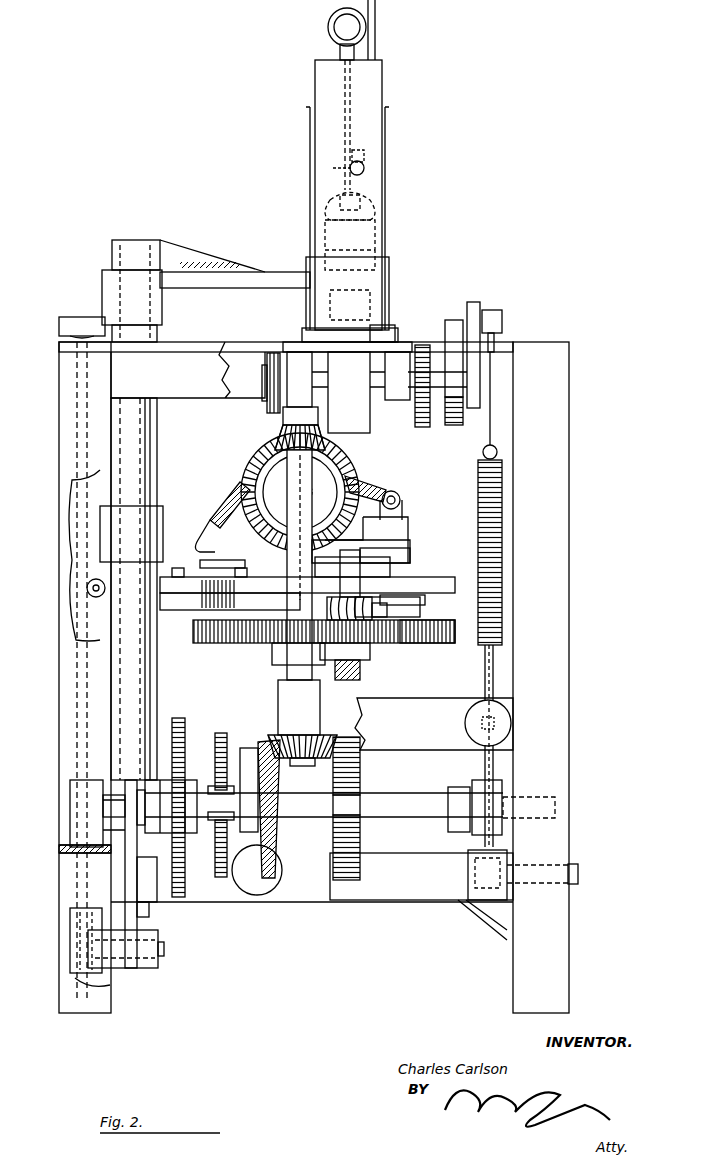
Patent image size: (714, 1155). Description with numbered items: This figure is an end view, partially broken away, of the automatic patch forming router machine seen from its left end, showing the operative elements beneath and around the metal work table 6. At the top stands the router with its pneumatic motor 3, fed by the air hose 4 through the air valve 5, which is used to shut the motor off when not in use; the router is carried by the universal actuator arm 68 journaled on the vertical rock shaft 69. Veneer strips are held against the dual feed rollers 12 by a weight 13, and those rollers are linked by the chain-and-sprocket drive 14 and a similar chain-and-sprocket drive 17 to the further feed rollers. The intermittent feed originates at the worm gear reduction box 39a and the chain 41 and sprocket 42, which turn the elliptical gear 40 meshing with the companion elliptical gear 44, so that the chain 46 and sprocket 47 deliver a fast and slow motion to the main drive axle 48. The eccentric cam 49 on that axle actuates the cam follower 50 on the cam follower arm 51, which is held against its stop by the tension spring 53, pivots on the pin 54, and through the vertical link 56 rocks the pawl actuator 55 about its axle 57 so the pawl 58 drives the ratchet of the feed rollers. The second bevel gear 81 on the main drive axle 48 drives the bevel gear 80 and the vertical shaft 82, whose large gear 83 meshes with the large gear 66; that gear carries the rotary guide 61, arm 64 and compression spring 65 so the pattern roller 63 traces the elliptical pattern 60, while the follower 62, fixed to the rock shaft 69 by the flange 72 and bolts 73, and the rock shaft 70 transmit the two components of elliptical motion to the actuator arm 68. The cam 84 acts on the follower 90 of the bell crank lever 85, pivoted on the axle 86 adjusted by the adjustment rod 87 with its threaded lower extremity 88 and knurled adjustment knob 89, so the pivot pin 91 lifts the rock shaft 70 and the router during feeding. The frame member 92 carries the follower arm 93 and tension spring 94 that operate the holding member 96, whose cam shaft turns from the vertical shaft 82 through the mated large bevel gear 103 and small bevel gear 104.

The pneumatic motor 3 is at (365, 215).
The air hose 4 is at (378, 50).
The air valve 5 is at (352, 160).
The metal work table 6 is at (392, 336).
The dual feed rollers 12 is at (368, 400).
The weight 13 is at (330, 88).
The chain-and-sprocket drive 14 is at (423, 427).
The chain-and-sprocket drive 17 is at (270, 412).
The worm gear reduction box 39a is at (250, 745).
The elliptical gear 40 is at (362, 870).
The chain 41 is at (220, 733).
The sprocket 42 is at (226, 790).
The companion elliptical gear 44 is at (363, 832).
The chain 46 is at (178, 718).
The sprocket 47 is at (187, 780).
The main drive axle 48 is at (410, 797).
The eccentric cam 49 is at (462, 787).
The cam follower 50 is at (470, 852).
The cam follower arm 51 is at (494, 778).
The tension spring 53 is at (480, 485).
The pin 54 is at (580, 875).
The pawl actuator 55 is at (475, 304).
The vertical link 56 is at (504, 337).
The axle 57 is at (455, 427).
The pawl 58 is at (452, 355).
The elliptical pattern 60 is at (382, 575).
The rotary guide 61 is at (420, 603).
The follower 62 is at (268, 585).
The pattern roller 63 is at (357, 556).
The arm 64 is at (378, 610).
The compression spring 65 is at (326, 610).
The large gear 66 is at (435, 640).
The universal actuator arm 68 is at (284, 272).
The vertical rock shaft 69 is at (130, 240).
The rock shaft 70 is at (146, 664).
The flange 72 is at (170, 606).
The bolts 73 is at (180, 568).
The bevel gear 80 is at (312, 760).
The second bevel gear 81 is at (283, 838).
The vertical shaft 82 is at (286, 668).
The large gear 83 is at (213, 640).
The cam 84 is at (142, 788).
The bell crank lever 85 is at (155, 898).
The axle 86 is at (165, 950).
The adjustment rod 87 is at (72, 528).
The threaded lower extremity 88 is at (72, 895).
The knurled adjustment knob 89 is at (59, 330).
The follower 90 is at (110, 790).
The pivot pin 91 is at (150, 916).
The frame member 92 is at (430, 545).
The follower arm 93 is at (376, 486).
The tension spring 94 is at (228, 505).
The holding member 96 is at (303, 342).
The large bevel gear 103 is at (358, 448).
The small bevel gear 104 is at (322, 423).